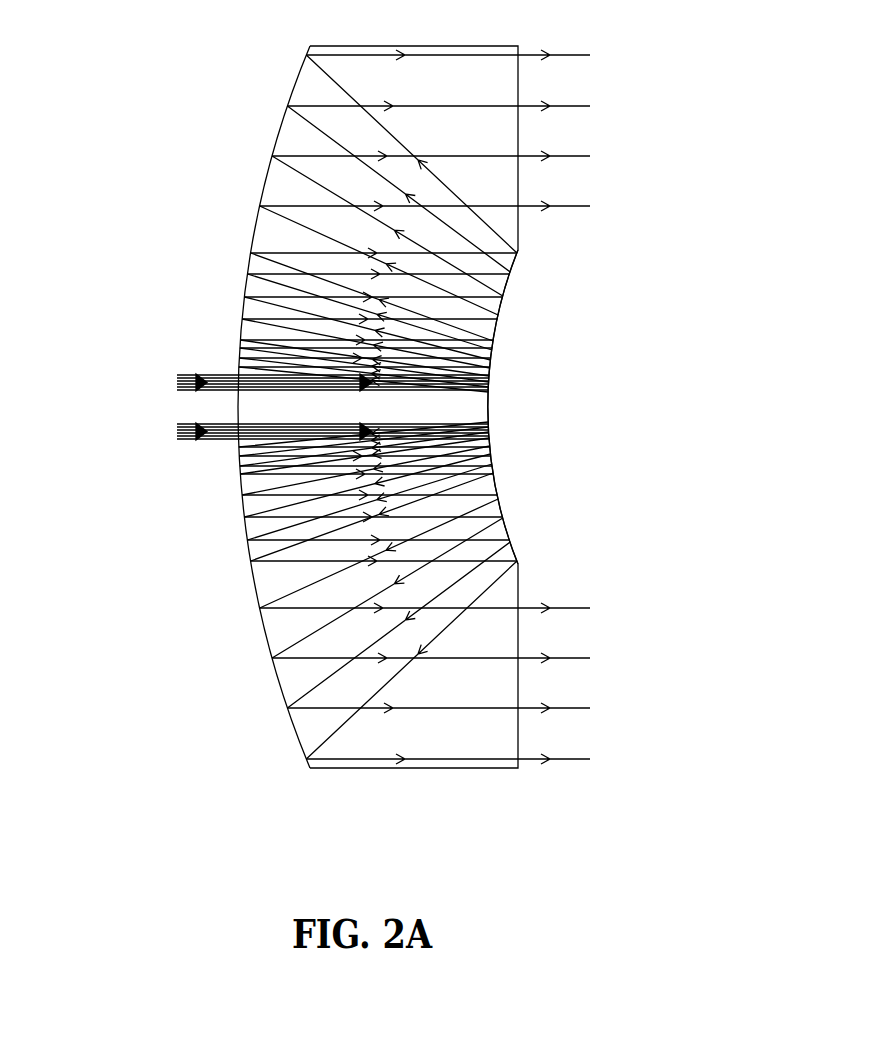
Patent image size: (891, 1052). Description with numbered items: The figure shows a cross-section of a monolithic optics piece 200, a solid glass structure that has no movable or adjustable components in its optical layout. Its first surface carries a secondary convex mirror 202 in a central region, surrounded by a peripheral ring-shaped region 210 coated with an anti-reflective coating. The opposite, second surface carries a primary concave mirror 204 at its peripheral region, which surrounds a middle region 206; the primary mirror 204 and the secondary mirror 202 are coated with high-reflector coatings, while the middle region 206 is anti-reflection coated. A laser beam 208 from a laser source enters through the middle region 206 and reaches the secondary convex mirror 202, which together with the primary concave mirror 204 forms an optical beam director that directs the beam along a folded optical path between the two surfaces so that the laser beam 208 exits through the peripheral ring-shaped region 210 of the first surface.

The monolithic optics piece 200 is at (348, 768).
The secondary convex mirror 202 is at (490, 382).
The primary concave mirror 204 is at (280, 123).
The middle region 206 is at (237, 457).
The laser beam 208 is at (380, 407).
The peripheral ring-shaped region 210 is at (518, 90).